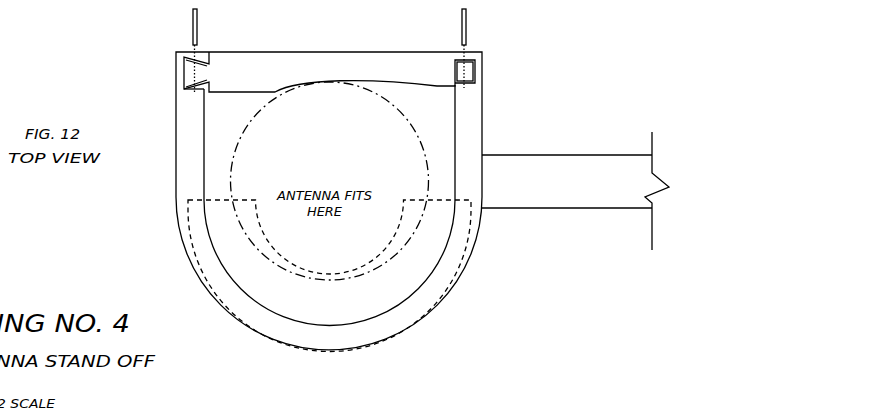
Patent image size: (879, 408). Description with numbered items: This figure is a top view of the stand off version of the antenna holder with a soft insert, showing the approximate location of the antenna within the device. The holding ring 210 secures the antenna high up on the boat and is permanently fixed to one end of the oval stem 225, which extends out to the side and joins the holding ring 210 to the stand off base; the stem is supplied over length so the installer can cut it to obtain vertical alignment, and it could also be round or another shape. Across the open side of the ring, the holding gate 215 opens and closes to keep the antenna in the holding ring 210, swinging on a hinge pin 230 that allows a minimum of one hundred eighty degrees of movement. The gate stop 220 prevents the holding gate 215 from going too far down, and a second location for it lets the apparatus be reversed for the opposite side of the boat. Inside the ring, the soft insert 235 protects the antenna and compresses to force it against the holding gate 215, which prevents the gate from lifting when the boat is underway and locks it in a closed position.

The holding ring 210 is at (467, 131).
The holding gate 215 is at (329, 72).
The gate stop 220 is at (197, 37).
The oval stem 225 is at (575, 191).
The hinge pin 230 is at (468, 38).
The soft insert 235 is at (412, 268).